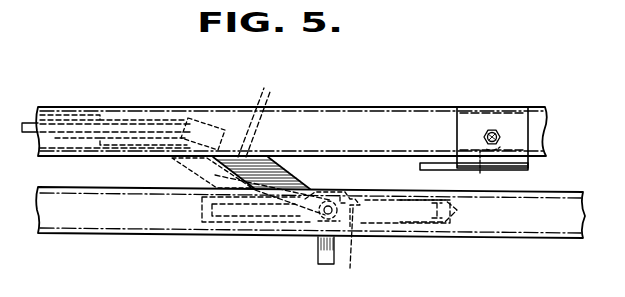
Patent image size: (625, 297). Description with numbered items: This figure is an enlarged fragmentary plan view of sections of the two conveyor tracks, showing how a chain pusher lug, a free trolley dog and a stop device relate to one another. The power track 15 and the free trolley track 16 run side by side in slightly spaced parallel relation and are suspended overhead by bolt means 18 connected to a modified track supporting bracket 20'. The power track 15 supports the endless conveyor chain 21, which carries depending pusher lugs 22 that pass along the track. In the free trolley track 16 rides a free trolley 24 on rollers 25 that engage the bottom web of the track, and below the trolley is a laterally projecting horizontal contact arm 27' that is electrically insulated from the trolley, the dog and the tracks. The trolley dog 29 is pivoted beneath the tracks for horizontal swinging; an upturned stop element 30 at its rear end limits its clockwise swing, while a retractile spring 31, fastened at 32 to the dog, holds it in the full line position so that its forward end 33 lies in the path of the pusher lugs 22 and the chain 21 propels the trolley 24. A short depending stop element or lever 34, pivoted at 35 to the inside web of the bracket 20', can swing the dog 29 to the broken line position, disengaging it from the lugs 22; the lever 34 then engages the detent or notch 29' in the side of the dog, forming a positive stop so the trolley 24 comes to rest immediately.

The power track 15 is at (312, 118).
The free trolley track 16 is at (143, 218).
The bolt means 18 is at (498, 130).
The modified track supporting bracket 20' is at (491, 119).
The conveyor chain 21 is at (78, 120).
The pusher lugs 22 is at (147, 127).
The free trolley 24 is at (383, 225).
The rollers 25 is at (470, 207).
The contact arm 27' is at (307, 262).
The trolley dog 29 is at (269, 173).
The detent or notch 29' is at (254, 112).
The upturned stop element 30 is at (355, 198).
The retractile spring 31 is at (354, 247).
The spring fastening point 32 is at (322, 198).
The forward end of trolley dog 33 is at (194, 118).
The stop element or lever 34 is at (440, 172).
The pivot 35 is at (484, 172).